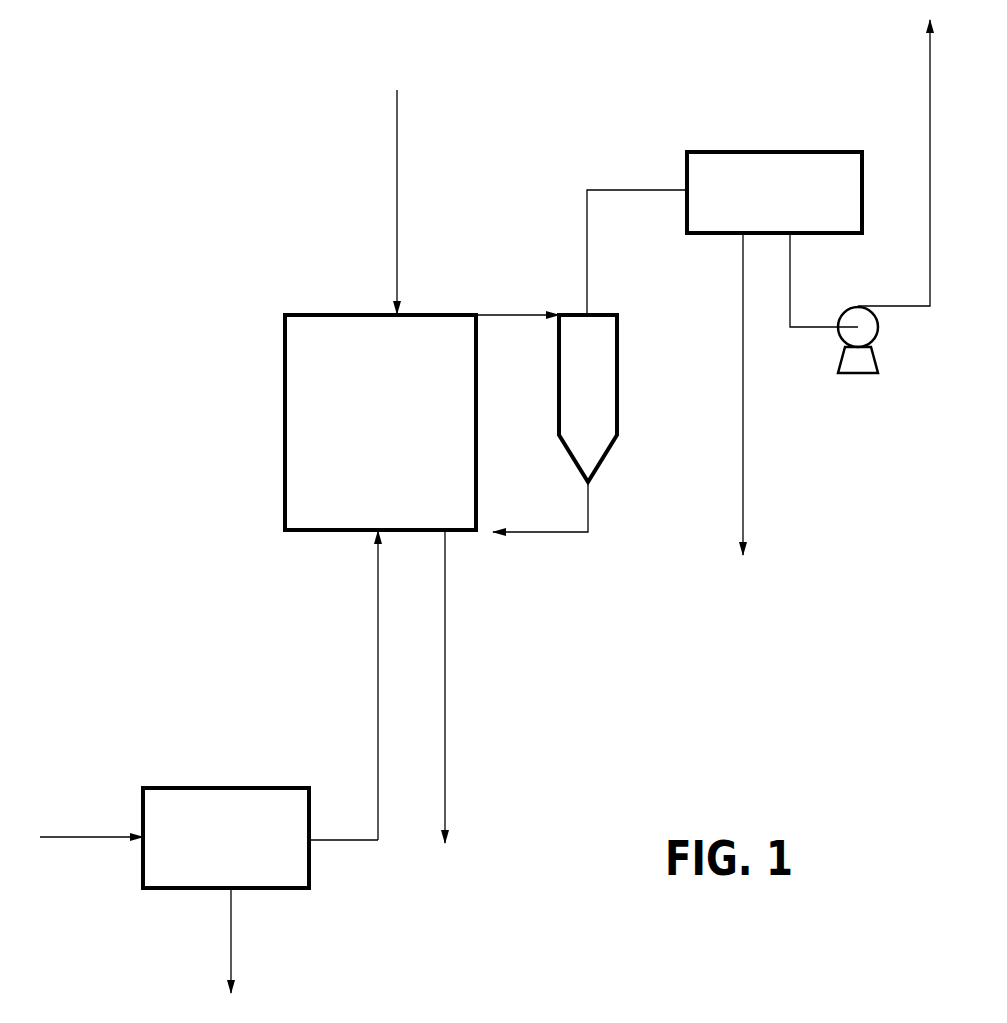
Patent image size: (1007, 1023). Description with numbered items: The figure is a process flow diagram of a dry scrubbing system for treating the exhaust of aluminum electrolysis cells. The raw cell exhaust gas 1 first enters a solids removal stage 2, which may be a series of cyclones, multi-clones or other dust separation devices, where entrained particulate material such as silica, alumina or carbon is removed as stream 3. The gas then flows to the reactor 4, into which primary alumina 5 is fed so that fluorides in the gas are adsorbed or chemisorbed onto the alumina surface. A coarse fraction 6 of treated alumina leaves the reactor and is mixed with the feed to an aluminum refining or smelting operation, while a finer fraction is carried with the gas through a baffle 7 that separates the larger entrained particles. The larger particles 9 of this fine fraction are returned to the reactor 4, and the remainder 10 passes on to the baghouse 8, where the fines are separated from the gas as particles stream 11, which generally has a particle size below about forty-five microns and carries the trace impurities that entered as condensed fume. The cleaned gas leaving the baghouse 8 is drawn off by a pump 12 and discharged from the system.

The raw cell exhaust gas 1 is at (86, 812).
The solids removal stage 2 is at (240, 855).
The removed solids stream 3 is at (248, 944).
The reactor 4 is at (394, 440).
The primary alumina 5 is at (413, 187).
The coarse fraction of treated alumina 6 is at (462, 694).
The baffle 7 is at (602, 398).
The baghouse 8 is at (795, 210).
The larger particles of the fine fraction 9 is at (540, 531).
The remainder of the fine fraction 10 is at (637, 227).
The particles stream 11 is at (769, 406).
The pump 12 is at (860, 196).